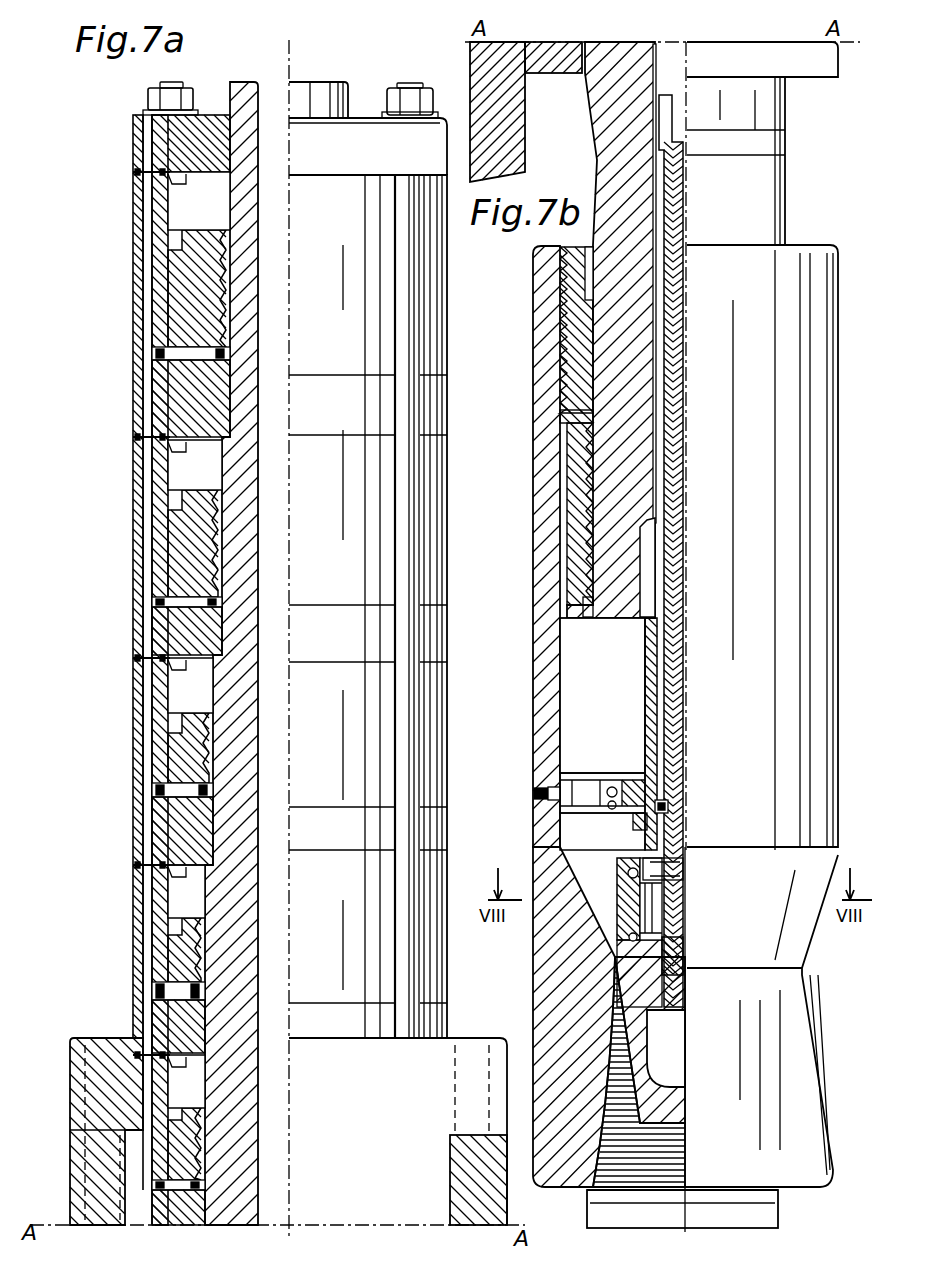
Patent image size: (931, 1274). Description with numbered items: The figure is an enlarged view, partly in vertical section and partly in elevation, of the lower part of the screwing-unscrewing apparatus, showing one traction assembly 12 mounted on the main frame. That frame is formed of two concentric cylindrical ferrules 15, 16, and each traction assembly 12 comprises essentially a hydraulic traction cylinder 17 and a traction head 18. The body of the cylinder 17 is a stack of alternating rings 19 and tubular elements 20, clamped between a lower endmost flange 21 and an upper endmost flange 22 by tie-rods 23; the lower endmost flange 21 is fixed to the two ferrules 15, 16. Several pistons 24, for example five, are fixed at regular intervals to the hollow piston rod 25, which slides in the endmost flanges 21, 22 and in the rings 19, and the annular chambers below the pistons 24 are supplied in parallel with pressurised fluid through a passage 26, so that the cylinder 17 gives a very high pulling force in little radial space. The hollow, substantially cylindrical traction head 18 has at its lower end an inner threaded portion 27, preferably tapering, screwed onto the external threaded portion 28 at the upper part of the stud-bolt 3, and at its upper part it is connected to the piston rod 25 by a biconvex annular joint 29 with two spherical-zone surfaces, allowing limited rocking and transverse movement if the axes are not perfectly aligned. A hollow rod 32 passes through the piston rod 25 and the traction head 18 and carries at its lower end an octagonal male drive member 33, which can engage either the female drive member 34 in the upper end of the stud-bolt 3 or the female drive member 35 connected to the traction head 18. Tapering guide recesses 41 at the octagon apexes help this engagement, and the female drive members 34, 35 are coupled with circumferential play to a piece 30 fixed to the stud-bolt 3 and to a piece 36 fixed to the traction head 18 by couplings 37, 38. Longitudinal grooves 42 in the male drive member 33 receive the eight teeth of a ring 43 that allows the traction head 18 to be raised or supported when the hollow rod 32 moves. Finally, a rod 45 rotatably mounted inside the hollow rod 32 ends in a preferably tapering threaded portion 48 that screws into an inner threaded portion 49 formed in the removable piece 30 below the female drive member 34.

In FIG. 7B, the stud-bolt 3 is at (778, 1218).
In FIG. 7A, the traction assembly 12 is at (112, 907).
In FIG. 7A, the inner ferrule 15 is at (72, 1202).
In FIG. 7B, the inner ferrule 15 is at (510, 152).
In FIG. 7A, the outer ferrule 16 is at (500, 1218).
In FIG. 7A, the hydraulic traction cylinder 17 is at (457, 590).
In FIG. 7B, the traction head 18 is at (525, 663).
In FIG. 7A, the ring 19 is at (152, 410).
In FIG. 7A, the tubular element 20 is at (152, 262).
In FIG. 7A, the lower endmost flange 21 is at (398, 1131).
In FIG. 7A, the upper endmost flange 22 is at (133, 148).
In FIG. 7A, the tie-rod 23 is at (150, 90).
In FIG. 7A, the piston 24 is at (182, 300).
In FIG. 7A, the piston rod 25 is at (313, 96).
In FIG. 7B, the piston rod 25 is at (765, 238).
In FIG. 7A, the passage 26 is at (168, 212).
In FIG. 7B, the inner threaded portion 27 is at (588, 1196).
In FIG. 7B, the external threaded portion 28 is at (661, 1140).
In FIG. 7B, the biconvex annular joint 29 is at (577, 418).
In FIG. 7B, the piece 30 is at (617, 887).
In FIG. 7B, the hollow rod 32 is at (662, 330).
In FIG. 7B, the male drive member 33 is at (648, 700).
In FIG. 7B, the female drive member 34 is at (645, 912).
In FIG. 7B, the female drive member 35 is at (628, 773).
In FIG. 7B, the piece 36 is at (583, 815).
In FIG. 7B, the coupling 37 is at (612, 908).
In FIG. 7B, the coupling 38 is at (605, 767).
In FIG. 7B, the tapering guide recess 41 is at (668, 806).
In FIG. 7B, the longitudinal groove 42 is at (648, 672).
In FIG. 7B, the ring 43 is at (640, 815).
In FIG. 7B, the rod 45 is at (682, 198).
In FIG. 7B, the threaded portion 48 is at (667, 897).
In FIG. 7B, the inner threaded portion 49 is at (683, 946).